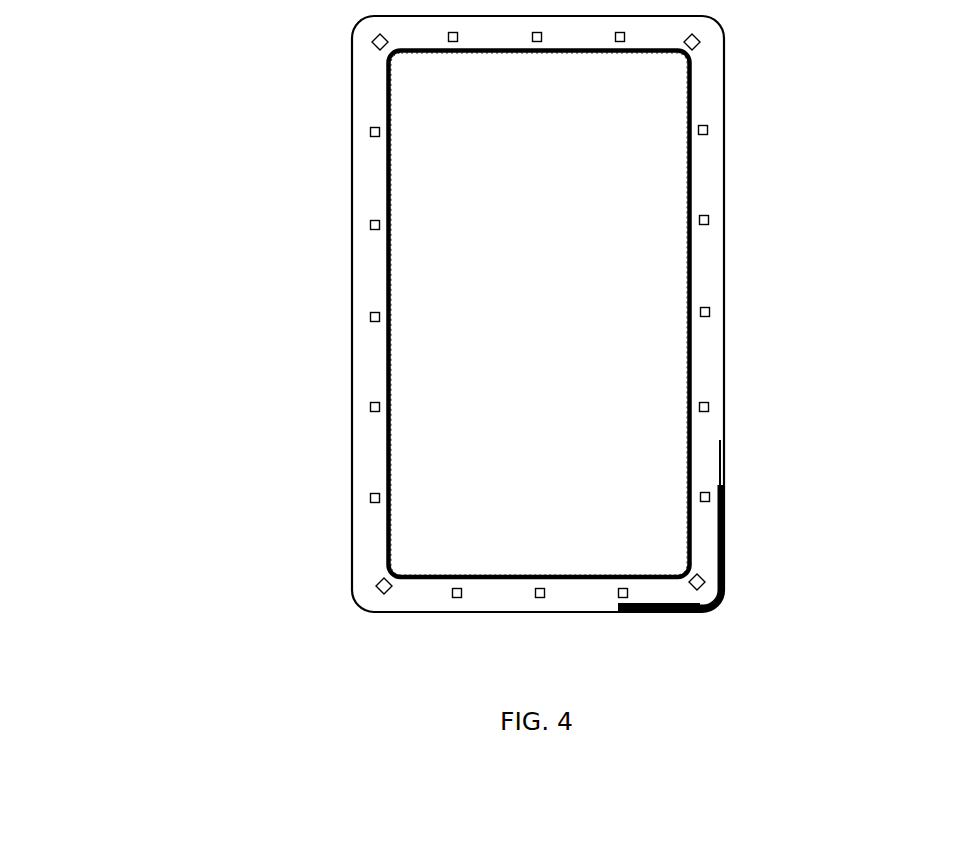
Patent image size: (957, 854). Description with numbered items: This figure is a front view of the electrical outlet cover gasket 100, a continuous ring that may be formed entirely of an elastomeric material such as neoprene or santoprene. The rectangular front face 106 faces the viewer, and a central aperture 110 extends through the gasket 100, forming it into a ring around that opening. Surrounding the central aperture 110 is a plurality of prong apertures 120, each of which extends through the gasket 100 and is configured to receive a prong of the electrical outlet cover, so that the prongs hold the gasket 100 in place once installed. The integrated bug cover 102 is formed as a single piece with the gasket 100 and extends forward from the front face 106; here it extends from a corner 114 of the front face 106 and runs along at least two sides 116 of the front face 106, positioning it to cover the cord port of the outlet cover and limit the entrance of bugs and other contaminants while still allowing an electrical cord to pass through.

The gasket 100 is at (286, 149).
The bug cover 102 is at (727, 537).
The front face 106 is at (372, 257).
The central aperture 110 is at (483, 311).
The corner 114 is at (698, 606).
The sides 116 is at (724, 393).
The prong apertures 120 is at (703, 130).